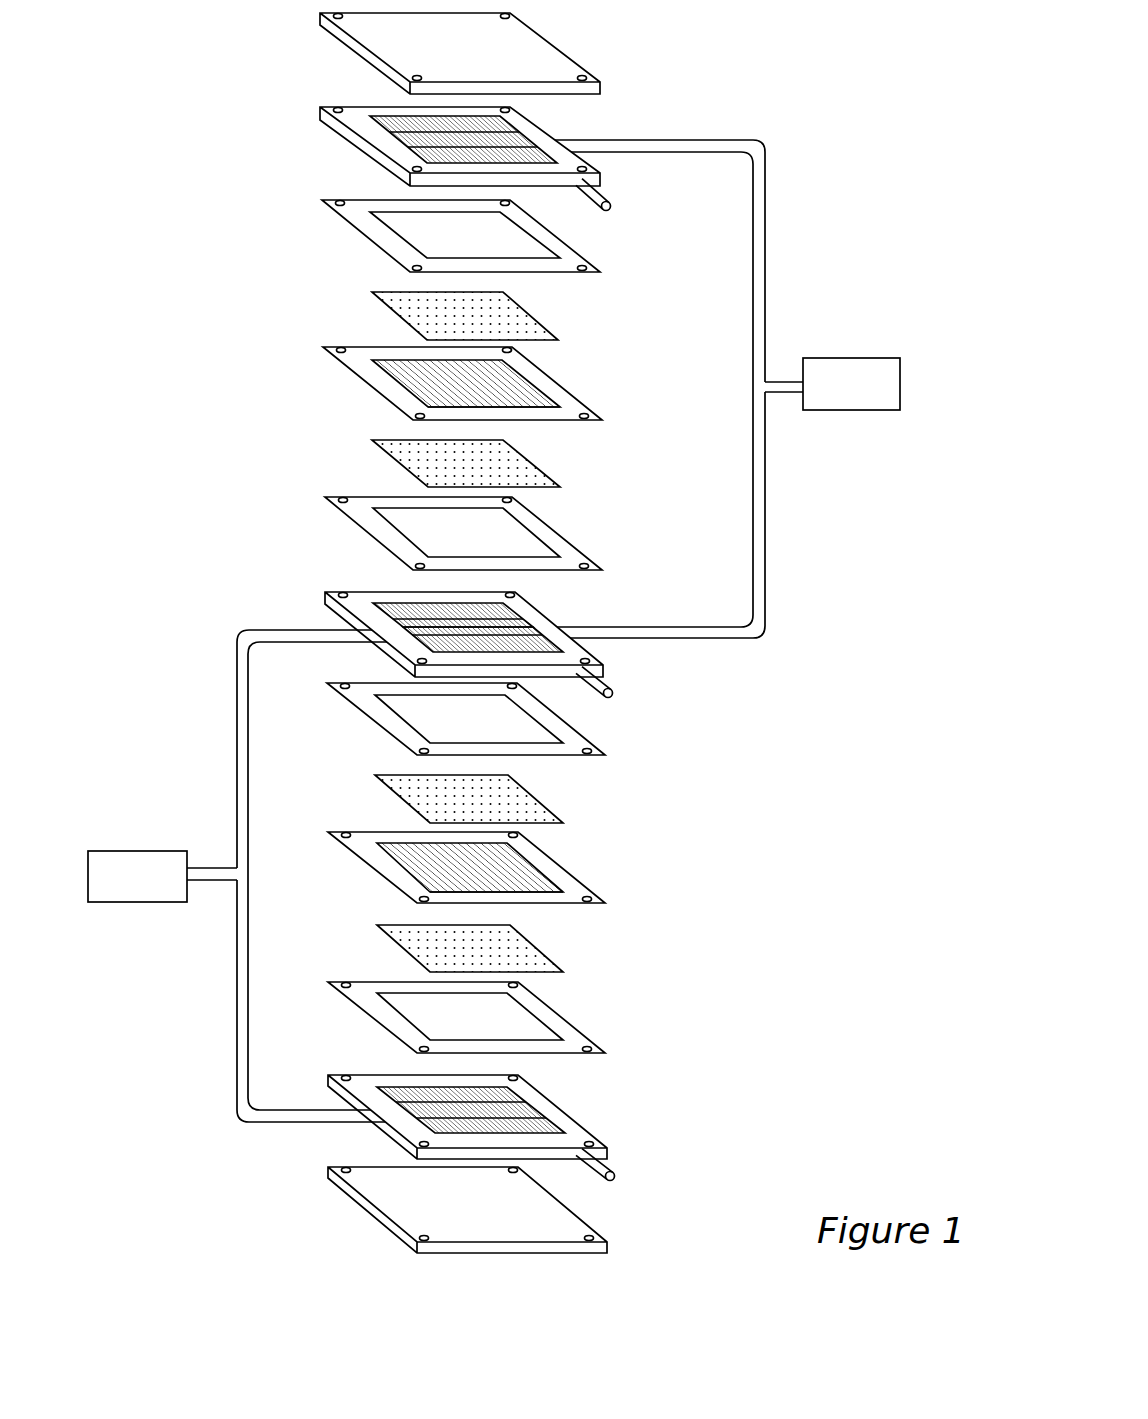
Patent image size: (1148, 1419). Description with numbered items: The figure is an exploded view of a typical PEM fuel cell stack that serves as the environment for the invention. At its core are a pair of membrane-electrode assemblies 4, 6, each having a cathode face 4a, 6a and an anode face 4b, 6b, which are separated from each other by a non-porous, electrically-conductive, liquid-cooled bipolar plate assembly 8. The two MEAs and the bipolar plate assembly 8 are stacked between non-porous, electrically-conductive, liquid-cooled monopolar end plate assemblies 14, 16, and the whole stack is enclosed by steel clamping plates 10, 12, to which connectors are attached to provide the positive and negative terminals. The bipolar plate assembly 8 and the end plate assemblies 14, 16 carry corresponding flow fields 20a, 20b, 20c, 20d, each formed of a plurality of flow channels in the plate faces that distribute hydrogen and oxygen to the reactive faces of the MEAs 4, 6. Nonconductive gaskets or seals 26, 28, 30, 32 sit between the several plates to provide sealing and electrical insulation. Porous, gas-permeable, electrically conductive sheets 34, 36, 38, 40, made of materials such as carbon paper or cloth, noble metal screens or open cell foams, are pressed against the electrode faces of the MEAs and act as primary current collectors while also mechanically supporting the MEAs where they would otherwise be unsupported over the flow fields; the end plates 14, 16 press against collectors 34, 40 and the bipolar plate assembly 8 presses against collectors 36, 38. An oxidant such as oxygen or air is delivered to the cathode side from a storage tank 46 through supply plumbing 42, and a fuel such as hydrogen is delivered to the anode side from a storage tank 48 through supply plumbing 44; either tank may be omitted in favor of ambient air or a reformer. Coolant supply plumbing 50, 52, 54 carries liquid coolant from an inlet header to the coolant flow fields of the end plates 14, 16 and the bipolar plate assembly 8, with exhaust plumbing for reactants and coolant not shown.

The steel clamping plate 10 is at (360, 50).
The steel clamping plate 12 is at (592, 1208).
The monopolar end plate assembly 14 is at (387, 157).
The monopolar end plate assembly 16 is at (510, 1111).
The flow field 20a is at (367, 160).
The flow field 20b is at (513, 613).
The flow field 20c is at (377, 645).
The flow field 20d is at (543, 1123).
The nonconductive gasket 26 is at (372, 240).
The nonconductive gasket 28 is at (362, 515).
The nonconductive gasket 30 is at (573, 737).
The nonconductive gasket 32 is at (557, 1017).
The primary current collector 34 is at (380, 300).
The primary current collector 36 is at (385, 453).
The primary current collector 38 is at (527, 802).
The primary current collector 40 is at (533, 950).
The membrane-electrode assembly 4 is at (425, 387).
The cathode face 4a is at (527, 407).
The anode face 4b is at (523, 383).
The membrane-electrode assembly 6 is at (504, 838).
The cathode face 6a is at (400, 883).
The anode face 6b is at (397, 847).
The bipolar plate assembly 8 is at (410, 611).
The supply plumbing 42 is at (767, 512).
The supply plumbing 44 is at (237, 992).
The storage tank 46 is at (875, 358).
The storage tank 48 is at (107, 851).
The coolant supply plumbing 50 is at (603, 188).
The coolant supply plumbing 52 is at (603, 681).
The coolant supply plumbing 54 is at (607, 1167).